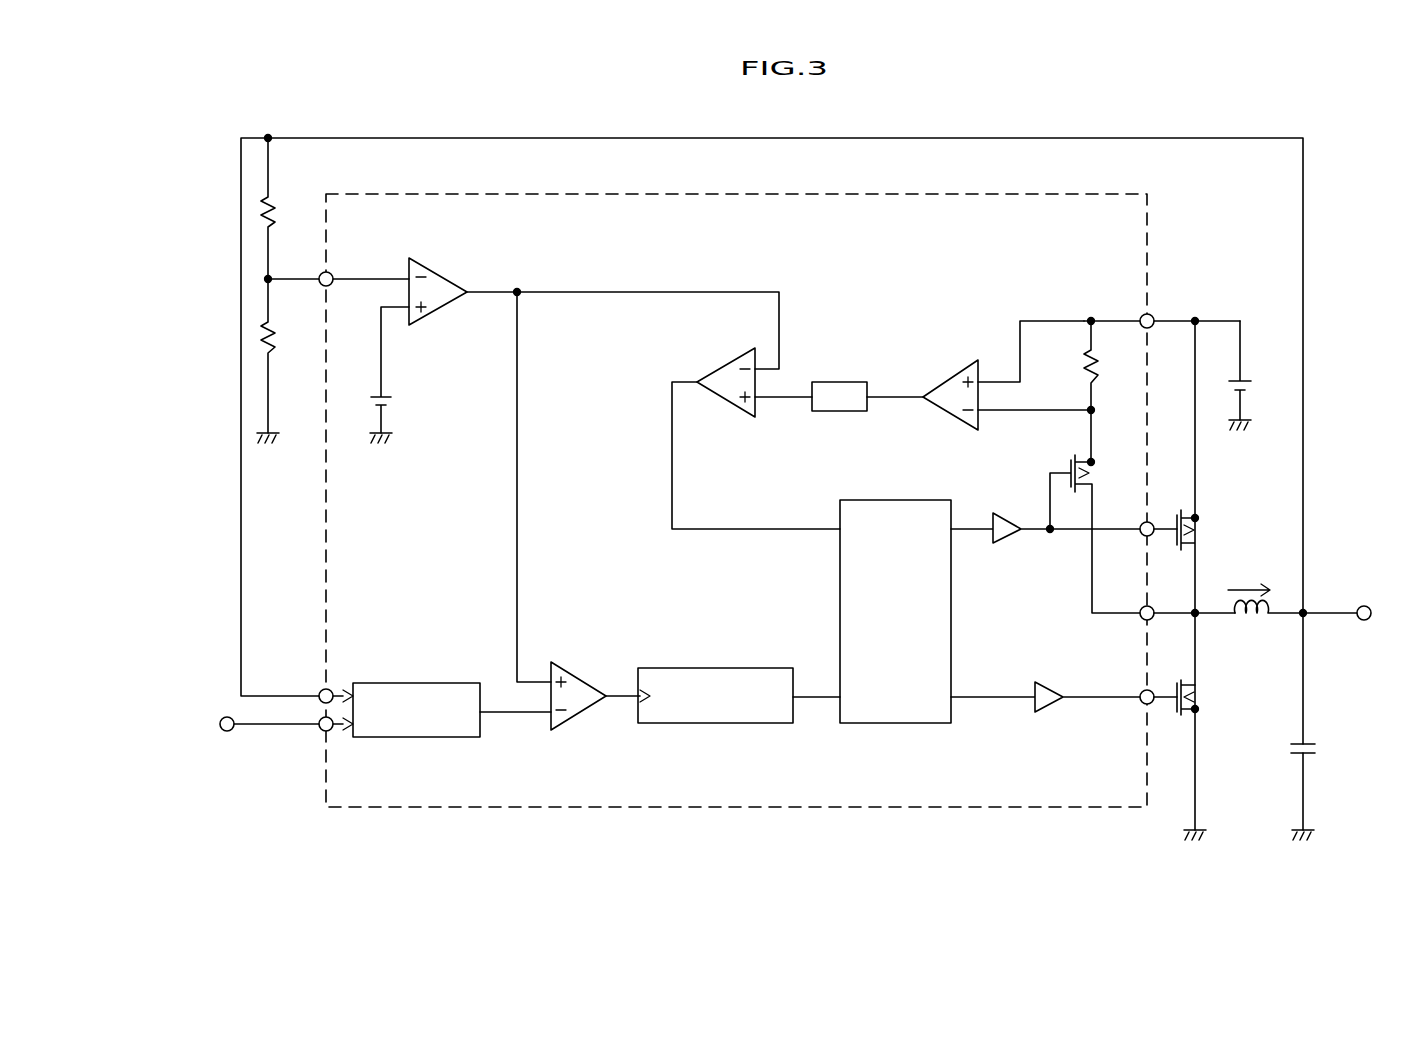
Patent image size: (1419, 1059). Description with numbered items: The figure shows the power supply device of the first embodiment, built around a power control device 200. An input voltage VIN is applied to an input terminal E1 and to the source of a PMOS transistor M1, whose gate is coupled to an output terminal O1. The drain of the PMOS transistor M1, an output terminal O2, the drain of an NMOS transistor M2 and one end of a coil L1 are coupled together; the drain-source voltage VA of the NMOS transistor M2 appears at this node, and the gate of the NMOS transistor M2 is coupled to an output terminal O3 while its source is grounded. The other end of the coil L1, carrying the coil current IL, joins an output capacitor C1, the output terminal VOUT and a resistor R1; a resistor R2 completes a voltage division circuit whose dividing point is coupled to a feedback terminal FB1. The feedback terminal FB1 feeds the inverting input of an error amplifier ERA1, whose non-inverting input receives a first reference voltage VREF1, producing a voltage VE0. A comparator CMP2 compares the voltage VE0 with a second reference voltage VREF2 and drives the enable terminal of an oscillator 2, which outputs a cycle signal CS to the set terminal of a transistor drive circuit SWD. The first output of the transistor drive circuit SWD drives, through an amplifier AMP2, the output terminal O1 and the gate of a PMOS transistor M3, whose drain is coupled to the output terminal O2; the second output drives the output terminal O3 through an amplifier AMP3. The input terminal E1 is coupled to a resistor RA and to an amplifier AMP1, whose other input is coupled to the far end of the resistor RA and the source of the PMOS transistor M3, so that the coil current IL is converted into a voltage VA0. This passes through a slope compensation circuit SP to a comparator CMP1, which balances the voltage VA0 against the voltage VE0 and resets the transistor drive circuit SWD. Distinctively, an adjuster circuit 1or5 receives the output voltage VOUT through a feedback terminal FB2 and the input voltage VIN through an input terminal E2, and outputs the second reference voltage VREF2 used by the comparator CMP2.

The power control device 200 is at (1025, 194).
The resistor R1 is at (285, 208).
The resistor R2 is at (283, 361).
The feedback terminal FB1 is at (329, 272).
The error amplifier ERA1 is at (433, 277).
The first reference voltage VREF1 is at (418, 375).
The voltage VE0 is at (555, 292).
The comparator CMP1 is at (756, 425).
The voltage VA0 is at (785, 397).
The slope compensation circuit SP is at (852, 411).
The amplifier AMP1 is at (1007, 375).
The input terminal E1 is at (1142, 316).
The resistor RA is at (1108, 390).
The PMOS transistor M3 is at (1094, 534).
The input voltage VIN is at (727, 527).
The transistor drive circuit SWD is at (840, 614).
The amplifier AMP2 is at (1005, 543).
The output terminal O1 is at (1143, 536).
The PMOS transistor M1 is at (1205, 575).
The output terminal O2 is at (1143, 620).
The drain-source voltage VA is at (1196, 648).
The coil L1 is at (1269, 624).
The coil current IL is at (1249, 575).
The output terminal VOUT is at (1365, 648).
The output capacitor C1 is at (1319, 739).
The amplifier AMP3 is at (1047, 712).
The output terminal O3 is at (1143, 704).
The NMOS transistor M2 is at (1205, 697).
The adjuster circuit 1or5 is at (383, 737).
The feedback terminal FB2 is at (321, 692).
The input terminal E2 is at (321, 728).
The second reference voltage VREF2 is at (516, 712).
The comparator CMP2 is at (591, 683).
The oscillator 2 is at (672, 723).
The cycle signal CS is at (815, 697).